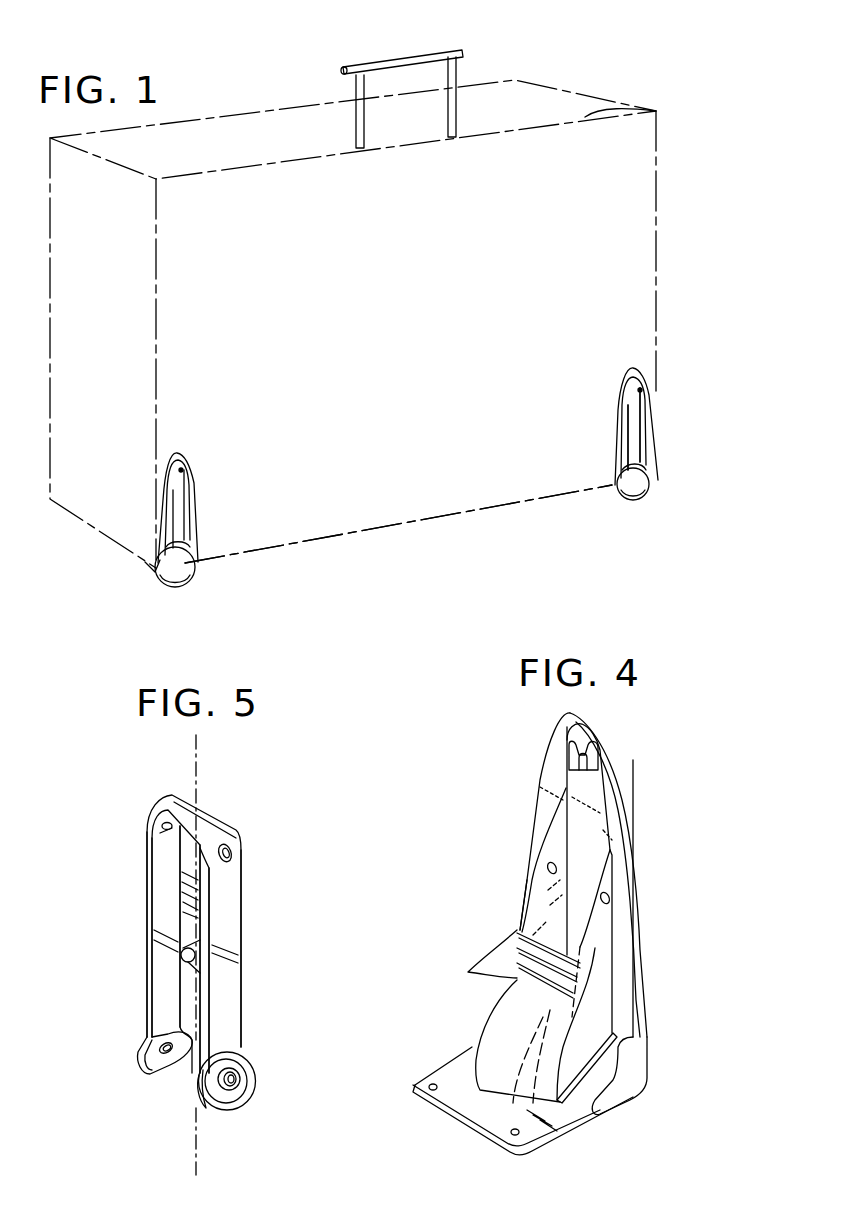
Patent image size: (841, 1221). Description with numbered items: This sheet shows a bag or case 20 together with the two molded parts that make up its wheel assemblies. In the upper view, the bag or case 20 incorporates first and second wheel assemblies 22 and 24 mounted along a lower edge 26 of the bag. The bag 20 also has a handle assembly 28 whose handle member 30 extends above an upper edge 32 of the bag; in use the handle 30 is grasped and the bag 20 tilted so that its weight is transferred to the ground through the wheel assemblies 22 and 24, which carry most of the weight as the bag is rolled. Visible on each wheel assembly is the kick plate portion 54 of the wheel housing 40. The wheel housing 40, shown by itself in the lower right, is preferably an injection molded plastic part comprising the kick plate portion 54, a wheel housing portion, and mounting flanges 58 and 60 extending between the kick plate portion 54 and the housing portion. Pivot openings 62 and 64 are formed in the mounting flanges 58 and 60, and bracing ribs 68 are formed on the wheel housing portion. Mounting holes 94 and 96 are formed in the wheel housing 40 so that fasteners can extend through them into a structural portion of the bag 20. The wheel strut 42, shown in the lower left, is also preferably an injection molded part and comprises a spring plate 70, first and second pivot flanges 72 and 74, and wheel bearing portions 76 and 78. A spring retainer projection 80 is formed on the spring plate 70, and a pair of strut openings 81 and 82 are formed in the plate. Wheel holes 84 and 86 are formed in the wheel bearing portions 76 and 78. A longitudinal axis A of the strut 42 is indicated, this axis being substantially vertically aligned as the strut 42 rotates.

In FIG. 1, the bag or case 20 is at (607, 88).
In FIG. 1, the first wheel assembly 22 is at (195, 576).
In FIG. 1, the second wheel assembly 24 is at (640, 508).
In FIG. 1, the lower edge 26 is at (455, 512).
In FIG. 1, the handle assembly 28 is at (460, 75).
In FIG. 1, the handle member 30 is at (433, 55).
In FIG. 1, the upper edge 32 is at (612, 116).
In FIG. 1, the kick plate portion 54 is at (648, 406).
In FIG. 4, the wheel housing 40 is at (516, 801).
In FIG. 4, the mounting flange 58 is at (543, 890).
In FIG. 4, the mounting flange 60 is at (595, 933).
In FIG. 4, the pivot opening 62 is at (547, 866).
In FIG. 4, the pivot opening 64 is at (611, 897).
In FIG. 4, the bracing ribs 68 is at (517, 935).
In FIG. 4, the mounting hole 94 is at (568, 768).
In FIG. 4, the mounting hole 96 is at (505, 1134).
In FIG. 5, the wheel strut 42 is at (131, 819).
In FIG. 5, the spring plate 70 is at (207, 872).
In FIG. 5, the first pivot flange 72 is at (162, 900).
In FIG. 5, the second pivot flange 74 is at (227, 910).
In FIG. 5, the wheel bearing portion 76 is at (162, 1078).
In FIG. 5, the wheel bearing portion 78 is at (235, 1100).
In FIG. 5, the spring retainer projection 80 is at (186, 950).
In FIG. 5, the strut opening 81 is at (156, 838).
In FIG. 5, the strut opening 82 is at (235, 853).
In FIG. 5, the wheel hole 84 is at (163, 1050).
In FIG. 5, the wheel hole 86 is at (238, 1081).
In FIG. 5, the longitudinal axis A is at (197, 773).